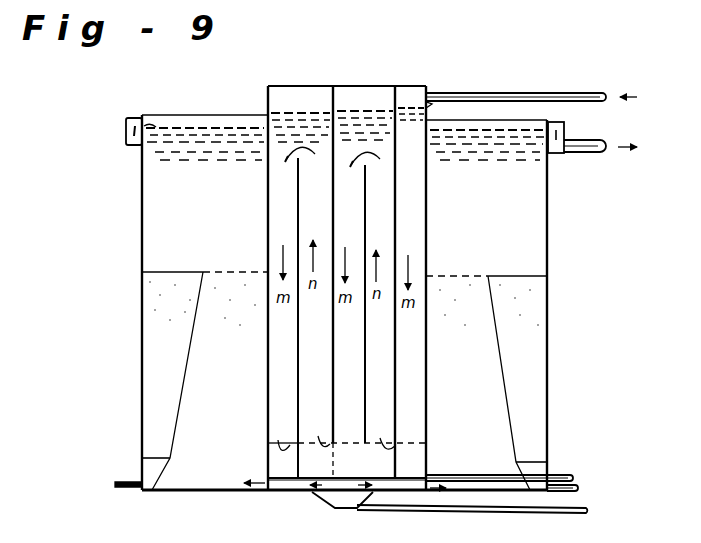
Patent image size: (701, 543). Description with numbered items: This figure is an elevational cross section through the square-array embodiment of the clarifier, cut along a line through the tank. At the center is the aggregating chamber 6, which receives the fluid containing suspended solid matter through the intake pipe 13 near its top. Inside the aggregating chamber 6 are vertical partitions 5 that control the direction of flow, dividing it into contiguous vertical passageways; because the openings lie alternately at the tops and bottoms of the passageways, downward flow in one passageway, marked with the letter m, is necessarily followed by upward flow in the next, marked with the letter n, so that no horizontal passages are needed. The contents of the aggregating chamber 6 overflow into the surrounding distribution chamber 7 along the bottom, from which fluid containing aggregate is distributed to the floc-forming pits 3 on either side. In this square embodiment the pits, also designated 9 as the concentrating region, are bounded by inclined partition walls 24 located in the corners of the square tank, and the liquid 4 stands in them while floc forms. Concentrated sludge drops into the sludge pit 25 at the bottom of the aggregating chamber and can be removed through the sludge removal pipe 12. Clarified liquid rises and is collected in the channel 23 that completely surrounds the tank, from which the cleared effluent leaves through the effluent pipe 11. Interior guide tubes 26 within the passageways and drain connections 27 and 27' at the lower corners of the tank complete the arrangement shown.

The floc-forming pit 3 is at (200, 476).
The liquid 4 is at (158, 182).
The partition 5 is at (366, 172).
The aggregating chamber 6 is at (374, 87).
The distribution chamber 7 is at (290, 488).
The concentrating chamber 9 is at (142, 355).
The cleared effluent tube 11 is at (588, 153).
The sludge removal pipe 12 is at (443, 510).
The intake pipe 13 is at (528, 93).
The channel 23 is at (134, 118).
The partition wall 24 is at (185, 384).
The sludge pit 25 is at (326, 510).
The guide tube 26 is at (275, 185).
The drain pipe 27 is at (356, 469).
The drain pipe 27' is at (507, 459).